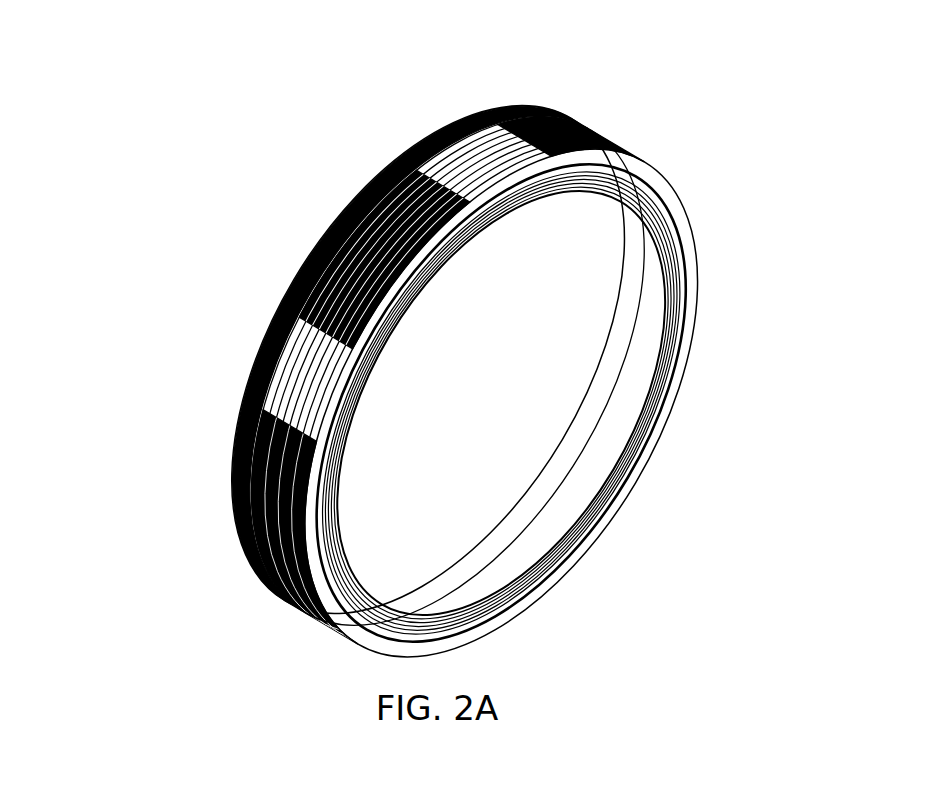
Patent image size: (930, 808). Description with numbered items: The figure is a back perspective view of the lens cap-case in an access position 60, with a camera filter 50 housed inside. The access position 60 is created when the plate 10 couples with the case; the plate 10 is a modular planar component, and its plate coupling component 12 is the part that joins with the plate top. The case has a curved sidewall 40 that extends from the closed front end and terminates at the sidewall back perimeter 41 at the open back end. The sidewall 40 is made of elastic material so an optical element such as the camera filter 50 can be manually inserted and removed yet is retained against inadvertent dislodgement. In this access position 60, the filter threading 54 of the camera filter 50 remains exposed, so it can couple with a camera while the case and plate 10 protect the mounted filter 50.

The plate 10 is at (425, 373).
The plate coupling component 12 is at (377, 168).
The sidewall 40 is at (417, 385).
The sidewall back perimeter 41 is at (312, 495).
The camera filter 50 is at (623, 360).
The filter threading 54 is at (637, 197).
The access position 60 is at (632, 120).